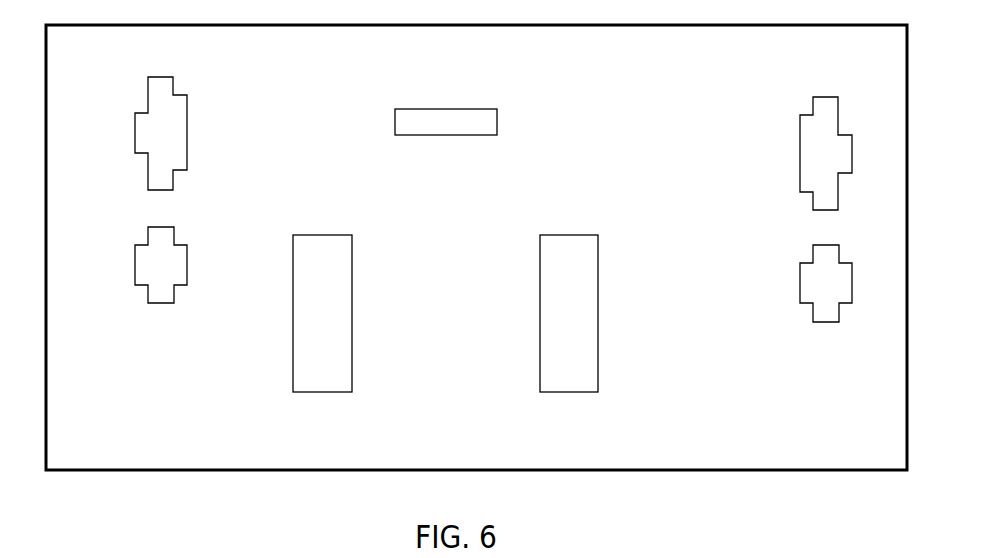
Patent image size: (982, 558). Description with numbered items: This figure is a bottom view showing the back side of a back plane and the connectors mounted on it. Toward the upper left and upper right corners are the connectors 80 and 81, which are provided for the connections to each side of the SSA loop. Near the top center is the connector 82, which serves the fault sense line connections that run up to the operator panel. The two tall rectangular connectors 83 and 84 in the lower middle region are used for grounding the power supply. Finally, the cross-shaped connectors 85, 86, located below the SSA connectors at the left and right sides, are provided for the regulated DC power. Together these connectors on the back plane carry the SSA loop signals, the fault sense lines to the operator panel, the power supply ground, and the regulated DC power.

The connector 80 is at (187, 117).
The connector 81 is at (798, 140).
The connector 82 is at (497, 116).
The connector 83 is at (352, 252).
The connector 84 is at (598, 255).
The connector 85 is at (187, 250).
The connector 86 is at (800, 273).